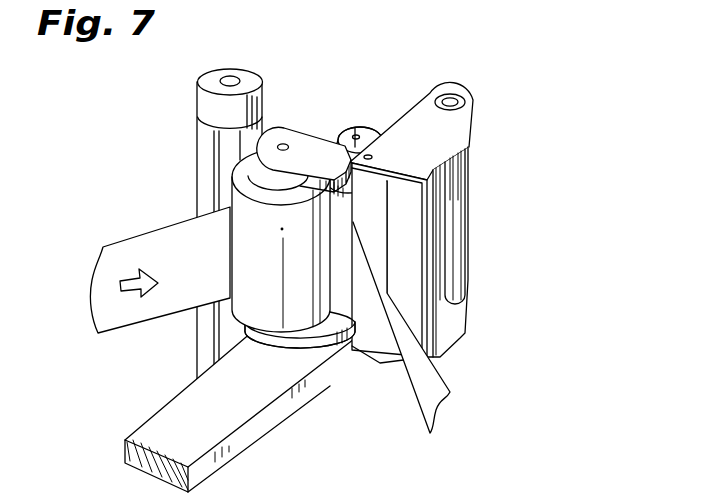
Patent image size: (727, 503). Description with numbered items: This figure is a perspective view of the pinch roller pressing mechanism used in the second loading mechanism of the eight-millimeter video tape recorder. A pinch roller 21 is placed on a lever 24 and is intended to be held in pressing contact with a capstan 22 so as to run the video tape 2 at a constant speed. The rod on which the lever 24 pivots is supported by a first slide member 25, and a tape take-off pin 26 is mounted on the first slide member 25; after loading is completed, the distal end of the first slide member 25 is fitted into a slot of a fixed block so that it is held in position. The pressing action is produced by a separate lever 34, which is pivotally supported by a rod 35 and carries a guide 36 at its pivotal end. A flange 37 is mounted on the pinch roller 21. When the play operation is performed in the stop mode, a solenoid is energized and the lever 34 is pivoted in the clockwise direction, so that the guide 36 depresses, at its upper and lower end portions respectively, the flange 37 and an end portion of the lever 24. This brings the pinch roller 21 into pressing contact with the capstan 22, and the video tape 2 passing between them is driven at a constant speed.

The video tape 2 is at (404, 412).
The pinch roller 21 is at (246, 240).
The capstan 22 is at (230, 151).
The lever 24 is at (304, 343).
The first slide member 25 is at (268, 410).
The tape take-off pin 26 is at (373, 135).
The lever 34 is at (457, 191).
The rod 35 is at (452, 101).
The guide 36 is at (380, 223).
The flange 37 is at (313, 146).